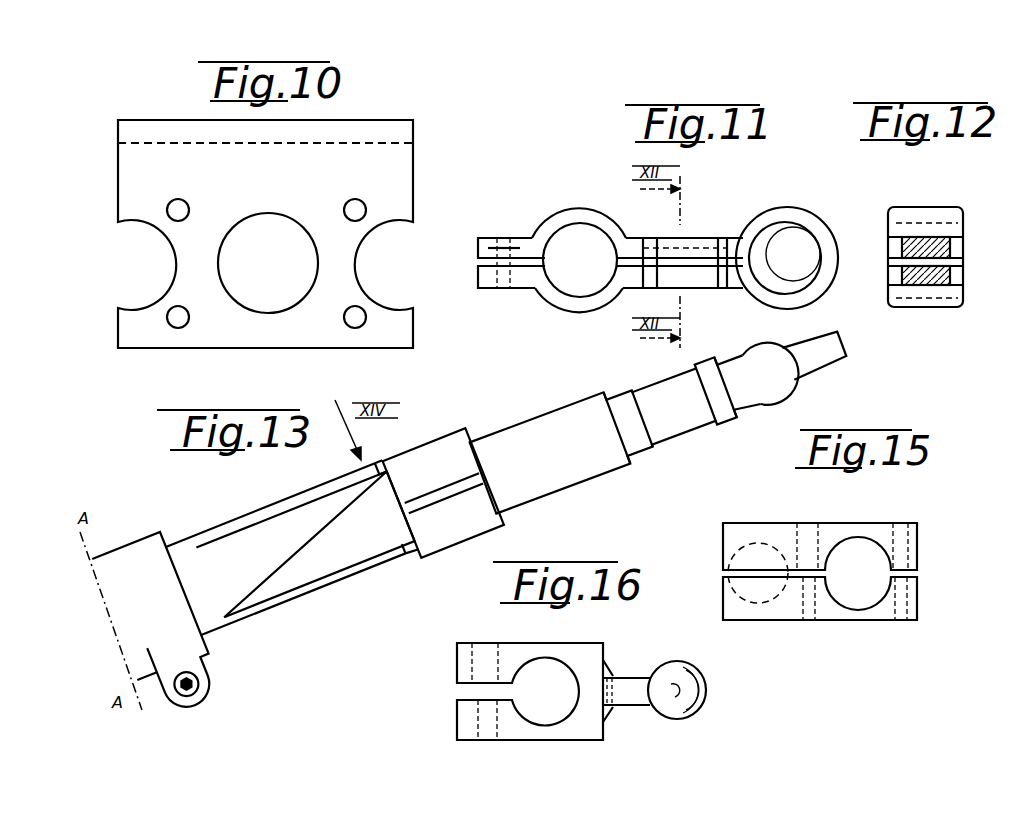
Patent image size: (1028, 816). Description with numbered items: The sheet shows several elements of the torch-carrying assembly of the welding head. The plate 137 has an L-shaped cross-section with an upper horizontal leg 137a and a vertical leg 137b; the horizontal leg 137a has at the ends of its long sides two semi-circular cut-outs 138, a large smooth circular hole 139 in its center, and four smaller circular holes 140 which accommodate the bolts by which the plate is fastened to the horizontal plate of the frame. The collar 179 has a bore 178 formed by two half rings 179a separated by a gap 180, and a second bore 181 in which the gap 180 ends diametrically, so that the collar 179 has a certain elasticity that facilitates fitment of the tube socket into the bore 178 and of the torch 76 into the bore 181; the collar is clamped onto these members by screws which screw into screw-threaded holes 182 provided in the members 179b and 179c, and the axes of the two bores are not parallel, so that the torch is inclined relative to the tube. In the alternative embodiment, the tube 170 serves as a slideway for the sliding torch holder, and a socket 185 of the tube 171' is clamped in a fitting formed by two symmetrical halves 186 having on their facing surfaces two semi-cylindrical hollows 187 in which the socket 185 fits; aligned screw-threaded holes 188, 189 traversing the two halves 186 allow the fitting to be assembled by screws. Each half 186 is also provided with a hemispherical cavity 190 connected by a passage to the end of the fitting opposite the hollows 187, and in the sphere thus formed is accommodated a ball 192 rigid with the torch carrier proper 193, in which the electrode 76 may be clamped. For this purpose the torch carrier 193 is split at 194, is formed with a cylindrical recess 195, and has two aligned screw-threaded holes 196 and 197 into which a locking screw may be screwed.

In FIG. 10, the plate of L-shape cross-section 137 is at (413, 207).
In FIG. 10, the upper horizontal leg 137a is at (382, 167).
In FIG. 10, the vertical leg 137b is at (345, 142).
In FIG. 10, the semi-circular cut-outs 138 is at (176, 262).
In FIG. 10, the large smooth circular hole 139 is at (268, 263).
In FIG. 10, the circular holes 140 is at (350, 206).
In FIG. 11, the bore 178 is at (579, 260).
In FIG. 11, the collar 179 is at (782, 208).
In FIG. 12, the collar 179 is at (884, 215).
In FIG. 11, the half rings 179a is at (585, 218).
In FIG. 11, the member of the collar 179b is at (686, 262).
In FIG. 12, the member of the collar 179b is at (956, 213).
In FIG. 11, the member of the collar 179c is at (484, 268).
In FIG. 11, the gap 180 is at (537, 268).
In FIG. 12, the gap 180 is at (944, 232).
In FIG. 11, the second bore 181 is at (785, 258).
In FIG. 12, the second bore 181 is at (935, 224).
In FIG. 11, the screw-threaded holes 182 is at (505, 245).
In FIG. 13, the tube 170 is at (157, 545).
In FIG. 13, the tube 171' is at (276, 503).
In FIG. 13, the torch 76 is at (612, 486).
In FIG. 13, the socket 185 is at (412, 555).
In FIG. 13, the torch carrier proper 193 is at (443, 493).
In FIG. 16, the torch carrier proper 193 is at (570, 730).
In FIG. 13, the split 194 is at (457, 486).
In FIG. 16, the split 194 is at (487, 692).
In FIG. 15, the symmetrical halves 186 is at (858, 608).
In FIG. 15, the semi-cylindrical hollows 187 is at (858, 559).
In FIG. 15, the screw-threaded holes 188 is at (795, 535).
In FIG. 15, the screw-threaded holes 189 is at (805, 612).
In FIG. 15, the hemispherical cavity 190 is at (724, 552).
In FIG. 16, the ball 192 is at (666, 674).
In FIG. 16, the cylindrical recess 195 is at (545, 692).
In FIG. 16, the screw-threaded hole 196 is at (470, 661).
In FIG. 16, the screw-threaded hole 197 is at (475, 725).